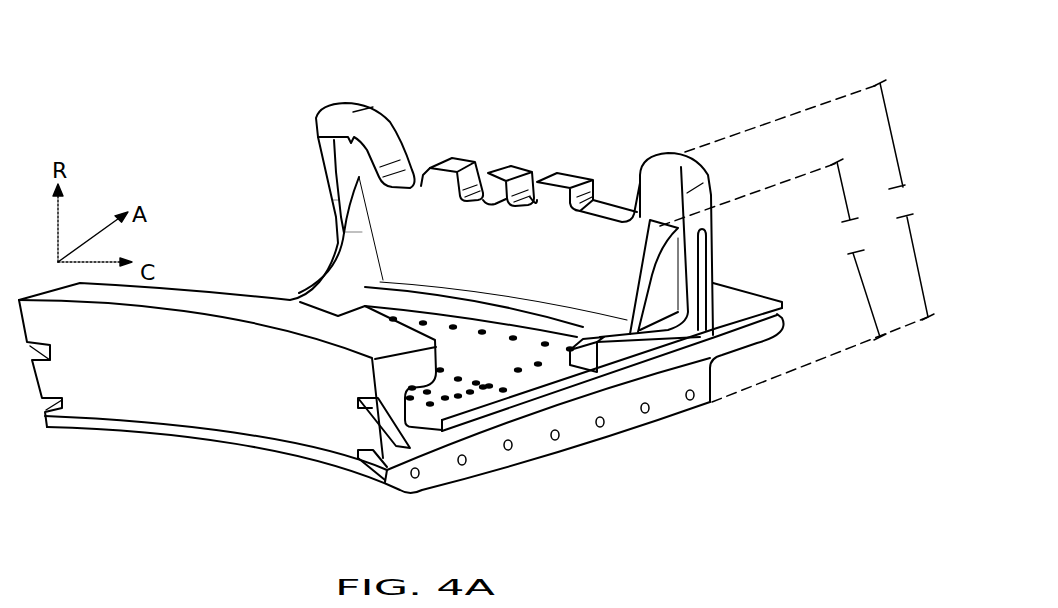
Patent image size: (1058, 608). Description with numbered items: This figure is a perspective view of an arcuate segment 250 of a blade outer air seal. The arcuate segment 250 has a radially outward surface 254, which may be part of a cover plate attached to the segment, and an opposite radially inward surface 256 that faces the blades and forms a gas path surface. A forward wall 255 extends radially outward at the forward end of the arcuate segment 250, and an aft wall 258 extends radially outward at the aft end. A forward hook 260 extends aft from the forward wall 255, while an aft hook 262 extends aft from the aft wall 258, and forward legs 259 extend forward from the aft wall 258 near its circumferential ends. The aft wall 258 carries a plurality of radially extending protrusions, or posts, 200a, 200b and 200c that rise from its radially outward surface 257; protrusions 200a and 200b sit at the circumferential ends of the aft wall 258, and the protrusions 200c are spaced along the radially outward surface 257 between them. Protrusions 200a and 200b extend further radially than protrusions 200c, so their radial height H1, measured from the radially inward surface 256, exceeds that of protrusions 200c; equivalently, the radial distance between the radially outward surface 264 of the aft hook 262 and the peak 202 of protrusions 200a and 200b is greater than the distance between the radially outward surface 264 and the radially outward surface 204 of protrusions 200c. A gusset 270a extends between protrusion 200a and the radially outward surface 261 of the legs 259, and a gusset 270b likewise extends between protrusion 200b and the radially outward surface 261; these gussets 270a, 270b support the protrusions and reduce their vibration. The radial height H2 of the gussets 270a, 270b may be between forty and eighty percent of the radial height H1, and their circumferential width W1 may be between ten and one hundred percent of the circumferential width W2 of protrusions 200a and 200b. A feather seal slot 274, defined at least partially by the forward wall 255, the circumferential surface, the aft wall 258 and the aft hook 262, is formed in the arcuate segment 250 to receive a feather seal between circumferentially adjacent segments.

The arcuate segment 250 is at (157, 155).
The radially outward surface (peak) of protrusions 200a and 200b 202 is at (352, 101).
The radially extending protrusion 200a is at (692, 178).
The radially extending protrusion 200b is at (387, 117).
The radially extending protrusions 200c is at (455, 162).
The radially outward surface of protrusions 200c 204 is at (449, 158).
The radially outward surface of aft wall 257 is at (606, 208).
The aft wall 258 is at (513, 262).
The circumferential width of gussets W1 is at (328, 217).
The circumferential width of protrusions 200a and 200b W2 is at (392, 246).
The gusset 270a is at (648, 267).
The gusset 270b is at (340, 243).
The radially outward surface of legs 261 is at (591, 347).
The radially outward surface of aft hook 264 is at (728, 292).
The aft hook 262 is at (763, 297).
The radial height of protrusions 200a and 200b H1 is at (809, 241).
The radial height of gussets H2 is at (773, 249).
The forward hook 260 is at (420, 362).
The radially outward surface 254 is at (493, 366).
The forward wall 255 is at (201, 387).
The feather seal slot 274 is at (424, 452).
The legs 259 is at (603, 365).
The radially inward surface 256 is at (580, 450).